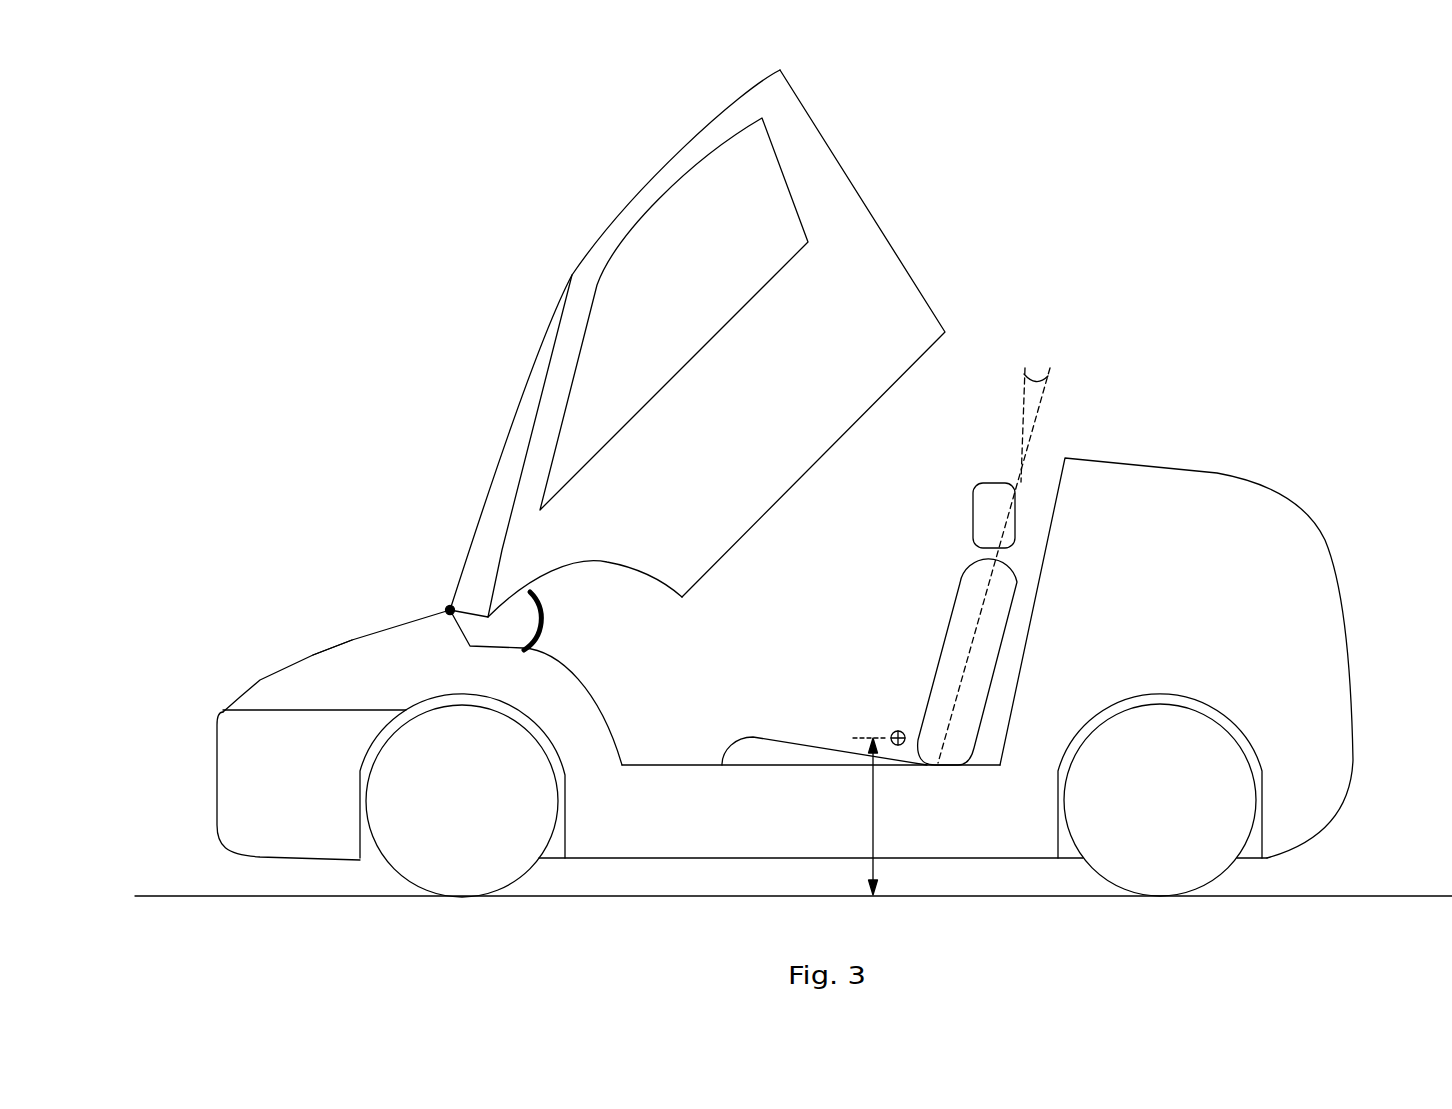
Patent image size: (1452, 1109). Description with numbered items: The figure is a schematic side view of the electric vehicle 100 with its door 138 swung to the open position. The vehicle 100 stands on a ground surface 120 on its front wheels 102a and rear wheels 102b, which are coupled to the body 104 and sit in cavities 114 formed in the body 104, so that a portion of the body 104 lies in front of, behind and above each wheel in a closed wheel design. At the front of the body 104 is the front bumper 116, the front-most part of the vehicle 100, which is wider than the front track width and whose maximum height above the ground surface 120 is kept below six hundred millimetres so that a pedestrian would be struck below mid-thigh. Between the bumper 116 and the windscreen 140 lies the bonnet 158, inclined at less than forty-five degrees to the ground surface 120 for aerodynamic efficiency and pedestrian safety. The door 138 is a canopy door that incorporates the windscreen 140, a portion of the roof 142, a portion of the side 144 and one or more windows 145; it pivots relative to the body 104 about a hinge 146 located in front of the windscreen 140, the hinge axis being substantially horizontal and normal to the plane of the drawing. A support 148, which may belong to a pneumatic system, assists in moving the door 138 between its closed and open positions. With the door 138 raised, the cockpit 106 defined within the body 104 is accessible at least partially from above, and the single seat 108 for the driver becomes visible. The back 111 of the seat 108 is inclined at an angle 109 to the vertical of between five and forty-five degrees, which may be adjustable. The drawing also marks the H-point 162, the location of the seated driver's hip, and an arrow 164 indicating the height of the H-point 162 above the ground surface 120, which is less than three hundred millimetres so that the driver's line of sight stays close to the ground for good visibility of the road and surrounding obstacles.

The electric vehicle 100 is at (284, 442).
The front wheels 102a is at (403, 878).
The rear wheels 102b is at (1220, 877).
The body 104 is at (1220, 475).
The cockpit 106 is at (880, 500).
The seat 108 is at (785, 738).
The angle of the seat back 109 is at (1037, 375).
The back of the seat 111 is at (947, 627).
The cavities 114 is at (565, 780).
The front bumper 116 is at (217, 763).
The ground surface 120 is at (182, 900).
The door 138 is at (855, 182).
The windscreen 140 is at (513, 402).
The roof 142 is at (687, 147).
The side 144 is at (865, 302).
The windows 145 is at (660, 270).
The hinge 146 is at (446, 607).
The support 148 is at (540, 618).
The bonnet 158 is at (313, 655).
The H-point 162 is at (893, 733).
The height of the H-point 164 is at (877, 830).